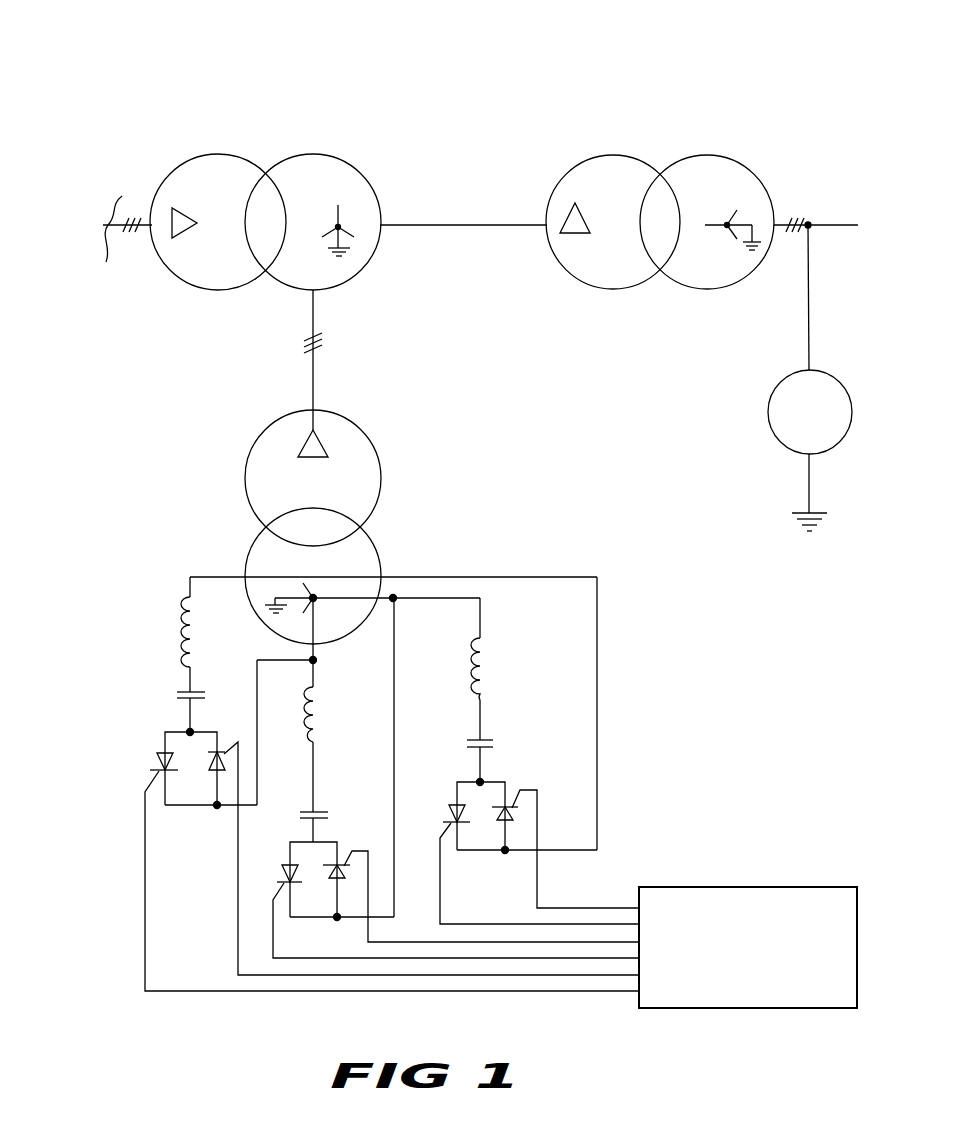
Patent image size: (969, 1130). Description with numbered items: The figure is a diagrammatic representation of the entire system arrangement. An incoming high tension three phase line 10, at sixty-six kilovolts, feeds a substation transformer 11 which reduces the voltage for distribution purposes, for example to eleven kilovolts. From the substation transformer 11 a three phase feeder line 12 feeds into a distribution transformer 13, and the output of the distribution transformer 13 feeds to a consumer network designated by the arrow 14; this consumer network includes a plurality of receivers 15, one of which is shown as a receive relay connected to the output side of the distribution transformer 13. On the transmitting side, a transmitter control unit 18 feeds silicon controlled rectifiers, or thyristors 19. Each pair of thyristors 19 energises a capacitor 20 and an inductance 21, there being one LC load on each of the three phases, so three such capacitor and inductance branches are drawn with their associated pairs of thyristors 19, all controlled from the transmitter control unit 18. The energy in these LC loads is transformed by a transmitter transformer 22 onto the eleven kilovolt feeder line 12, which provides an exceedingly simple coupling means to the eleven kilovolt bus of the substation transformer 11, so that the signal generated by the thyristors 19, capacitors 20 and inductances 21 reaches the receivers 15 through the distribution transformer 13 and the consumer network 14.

The incoming high tension three phase line 10 is at (157, 261).
The substation transformer 11 is at (262, 65).
The feeder line 12 is at (450, 228).
The distribution transformer 13 is at (656, 65).
The consumer network 14 is at (850, 208).
The receiver 15 is at (822, 380).
The transmitter control unit 18 is at (728, 884).
The silicon controlled rectifiers (thyristors) 19 is at (160, 752).
The capacitor 20 is at (180, 695).
The inductance 21 is at (183, 623).
The transmitter transformer 22 is at (260, 450).